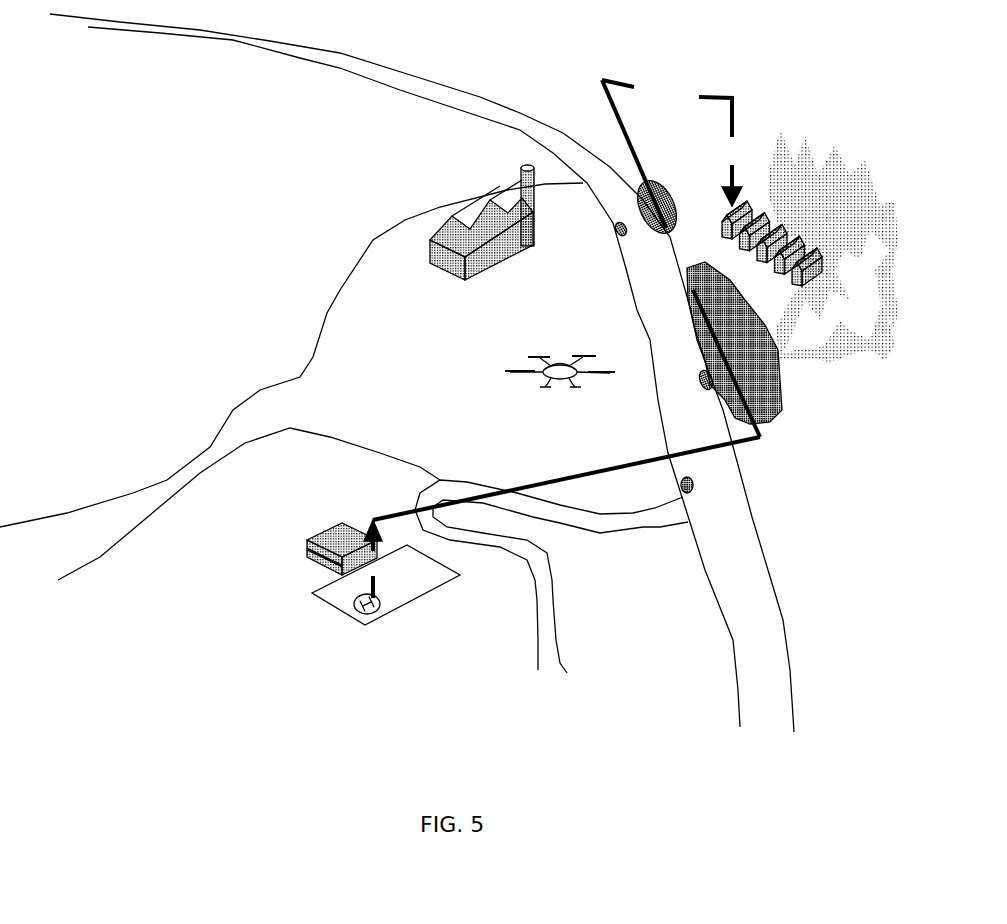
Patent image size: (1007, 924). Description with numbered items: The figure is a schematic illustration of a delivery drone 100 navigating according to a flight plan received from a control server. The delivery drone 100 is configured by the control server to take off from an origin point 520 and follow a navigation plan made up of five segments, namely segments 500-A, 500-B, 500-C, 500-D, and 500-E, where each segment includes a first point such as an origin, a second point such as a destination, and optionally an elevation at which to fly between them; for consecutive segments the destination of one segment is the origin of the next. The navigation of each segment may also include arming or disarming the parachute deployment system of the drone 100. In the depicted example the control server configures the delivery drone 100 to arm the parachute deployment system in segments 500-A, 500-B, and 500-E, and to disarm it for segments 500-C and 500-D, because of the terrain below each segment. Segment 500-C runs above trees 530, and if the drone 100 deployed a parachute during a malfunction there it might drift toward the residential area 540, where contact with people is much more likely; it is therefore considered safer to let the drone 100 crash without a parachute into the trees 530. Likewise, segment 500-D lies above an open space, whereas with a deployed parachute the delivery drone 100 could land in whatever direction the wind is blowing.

The delivery drone 100 is at (524, 354).
The origin point 520 is at (535, 384).
The trees 530 is at (744, 333).
The residential area 540 is at (834, 245).
The first segment 500-A is at (372, 559).
The second segment 500-B is at (566, 478).
The third segment 500-C is at (681, 258).
The fourth segment 500-D is at (667, 108).
The fifth segment 500-E is at (731, 173).